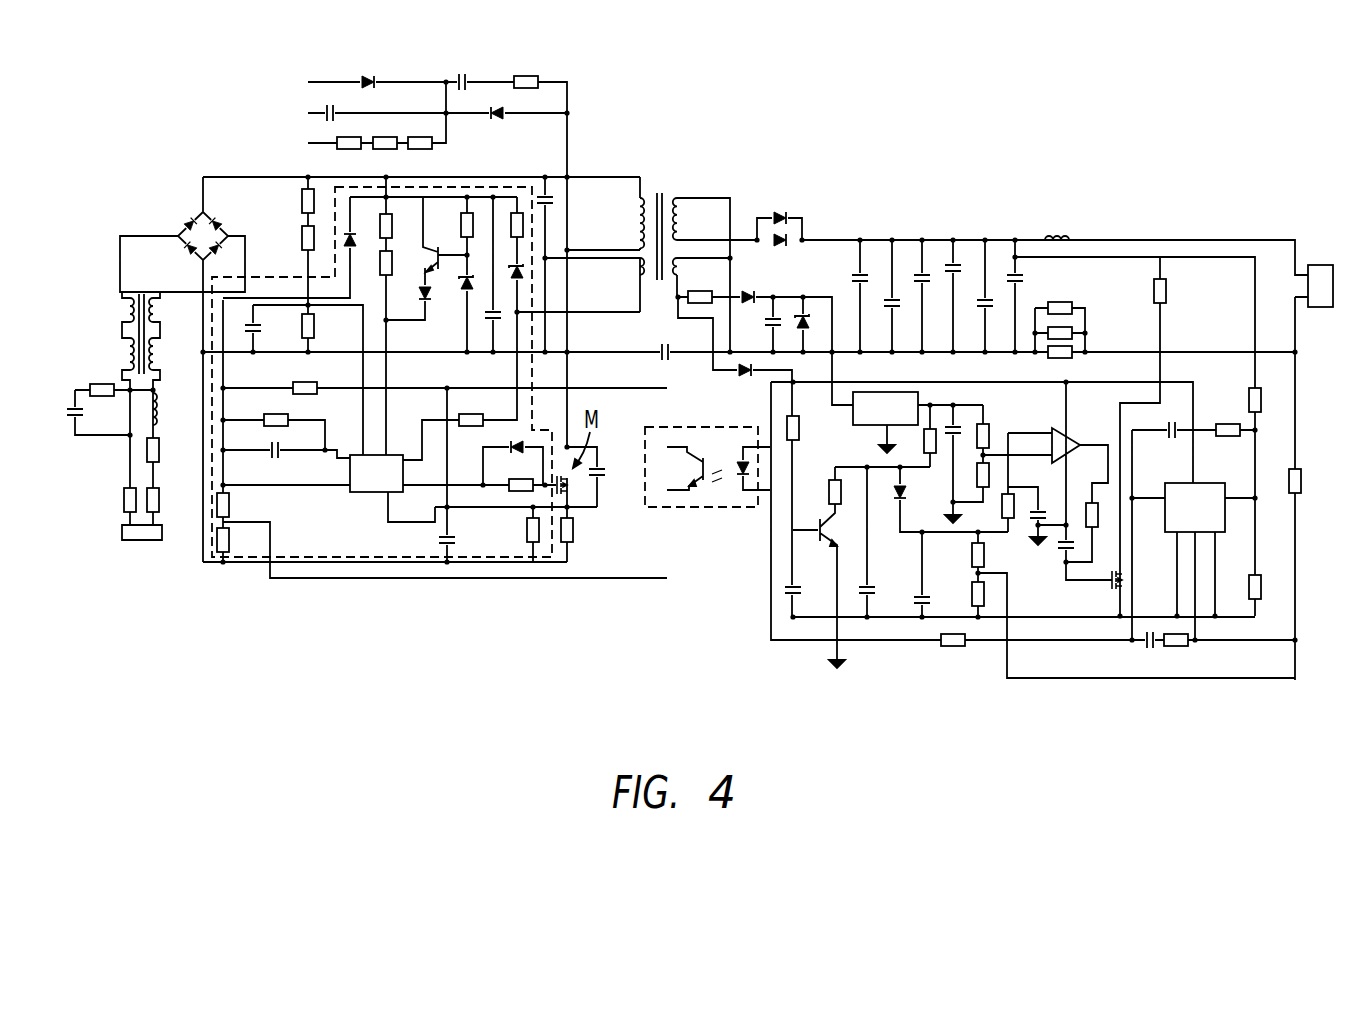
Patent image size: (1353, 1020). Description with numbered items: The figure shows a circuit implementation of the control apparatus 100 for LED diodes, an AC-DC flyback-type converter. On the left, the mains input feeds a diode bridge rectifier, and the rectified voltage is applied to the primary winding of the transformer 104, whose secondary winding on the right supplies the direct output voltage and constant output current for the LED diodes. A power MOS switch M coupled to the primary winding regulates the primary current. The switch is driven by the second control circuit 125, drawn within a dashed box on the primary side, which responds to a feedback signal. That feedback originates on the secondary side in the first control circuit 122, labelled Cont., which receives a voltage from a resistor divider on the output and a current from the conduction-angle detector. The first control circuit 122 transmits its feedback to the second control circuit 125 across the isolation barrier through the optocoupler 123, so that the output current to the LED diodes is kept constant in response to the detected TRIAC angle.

The control apparatus 100 is at (198, 156).
The transformer 104 is at (660, 192).
The first control circuit 122 is at (1178, 483).
The optocoupler 123 is at (700, 508).
The second control circuit 125 is at (455, 186).